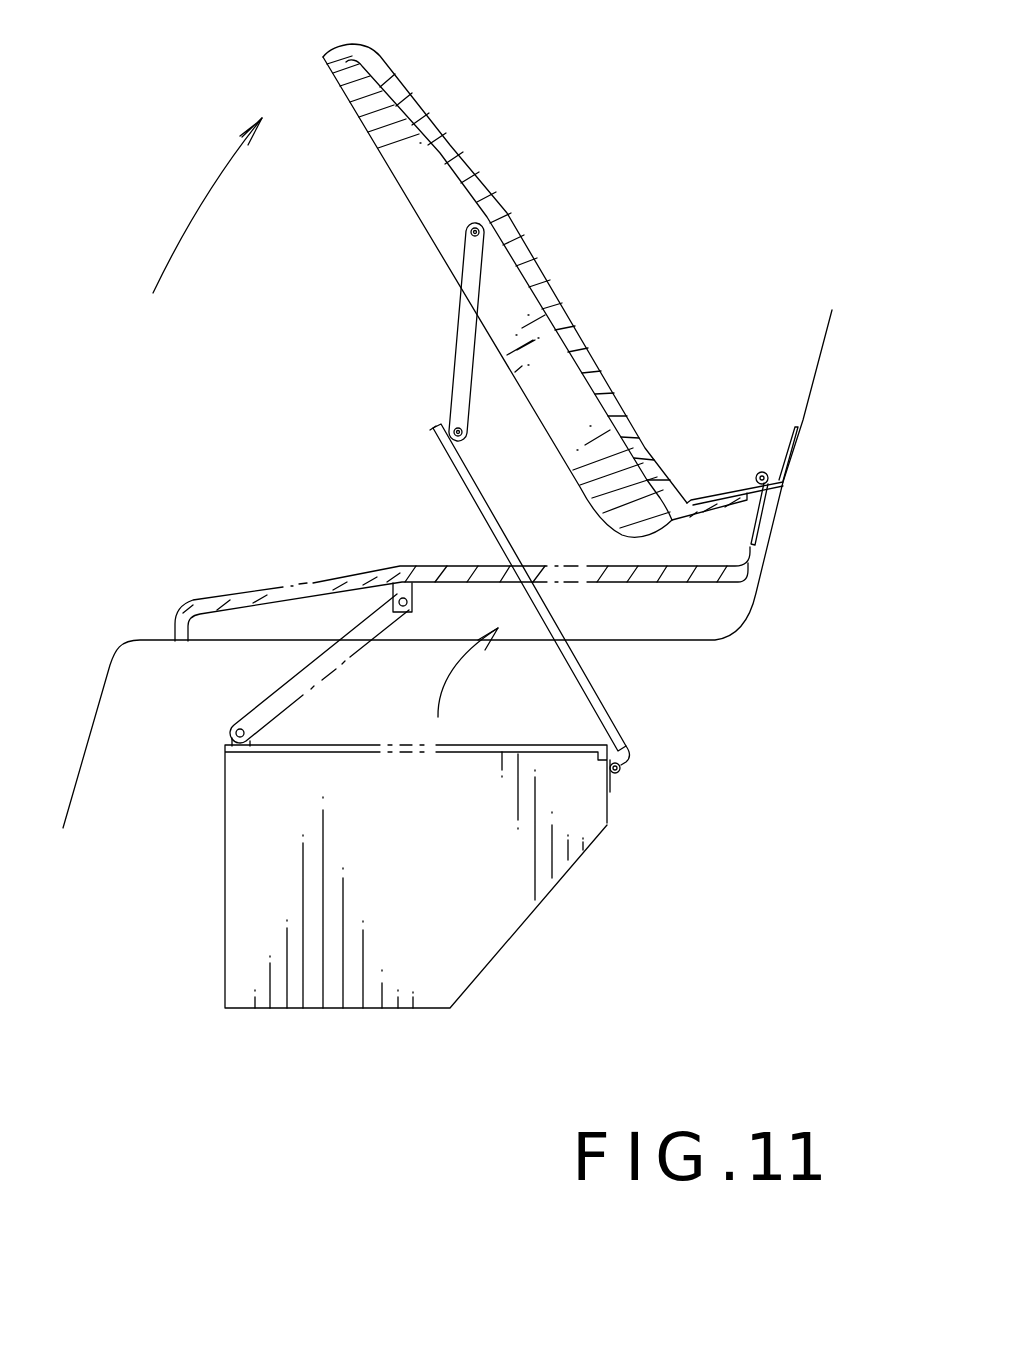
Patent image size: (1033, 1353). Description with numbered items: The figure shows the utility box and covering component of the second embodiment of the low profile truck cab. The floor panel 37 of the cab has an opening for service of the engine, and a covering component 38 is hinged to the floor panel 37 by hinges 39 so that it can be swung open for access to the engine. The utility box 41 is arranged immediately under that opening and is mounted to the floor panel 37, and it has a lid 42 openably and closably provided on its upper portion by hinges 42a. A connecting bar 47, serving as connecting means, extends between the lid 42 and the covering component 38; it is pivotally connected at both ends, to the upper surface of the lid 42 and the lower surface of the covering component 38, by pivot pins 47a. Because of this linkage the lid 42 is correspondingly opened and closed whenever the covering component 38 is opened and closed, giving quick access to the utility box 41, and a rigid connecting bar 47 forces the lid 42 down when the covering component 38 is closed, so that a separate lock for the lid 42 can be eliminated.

The floor panel 37 is at (145, 641).
The covering component 38 is at (560, 303).
The hinges 39 is at (763, 472).
The utility box 41 is at (517, 877).
The lid 42 is at (593, 684).
The hinges 42a is at (620, 771).
The connecting bar 47 is at (463, 315).
The pivot pins 47a is at (468, 230).